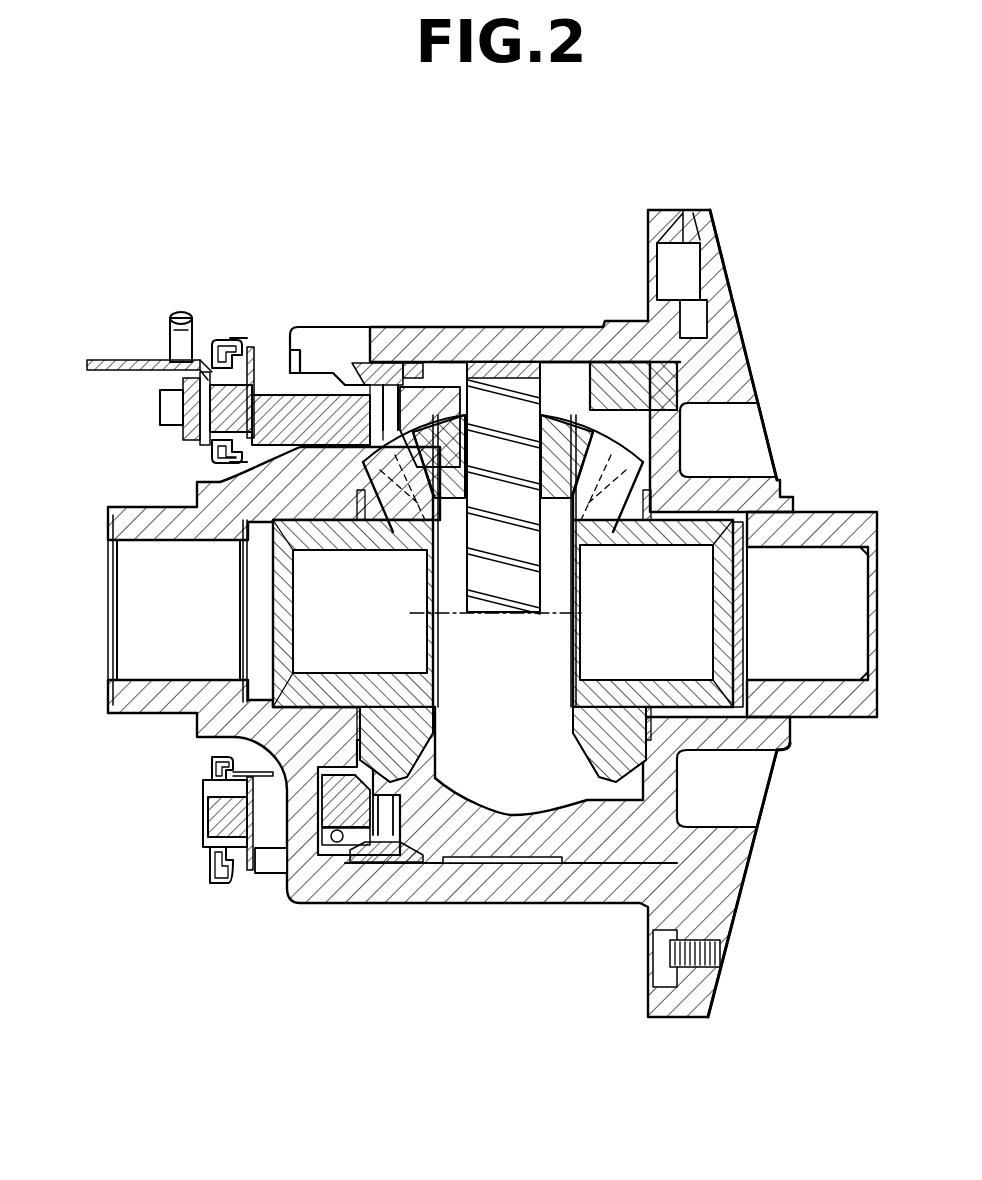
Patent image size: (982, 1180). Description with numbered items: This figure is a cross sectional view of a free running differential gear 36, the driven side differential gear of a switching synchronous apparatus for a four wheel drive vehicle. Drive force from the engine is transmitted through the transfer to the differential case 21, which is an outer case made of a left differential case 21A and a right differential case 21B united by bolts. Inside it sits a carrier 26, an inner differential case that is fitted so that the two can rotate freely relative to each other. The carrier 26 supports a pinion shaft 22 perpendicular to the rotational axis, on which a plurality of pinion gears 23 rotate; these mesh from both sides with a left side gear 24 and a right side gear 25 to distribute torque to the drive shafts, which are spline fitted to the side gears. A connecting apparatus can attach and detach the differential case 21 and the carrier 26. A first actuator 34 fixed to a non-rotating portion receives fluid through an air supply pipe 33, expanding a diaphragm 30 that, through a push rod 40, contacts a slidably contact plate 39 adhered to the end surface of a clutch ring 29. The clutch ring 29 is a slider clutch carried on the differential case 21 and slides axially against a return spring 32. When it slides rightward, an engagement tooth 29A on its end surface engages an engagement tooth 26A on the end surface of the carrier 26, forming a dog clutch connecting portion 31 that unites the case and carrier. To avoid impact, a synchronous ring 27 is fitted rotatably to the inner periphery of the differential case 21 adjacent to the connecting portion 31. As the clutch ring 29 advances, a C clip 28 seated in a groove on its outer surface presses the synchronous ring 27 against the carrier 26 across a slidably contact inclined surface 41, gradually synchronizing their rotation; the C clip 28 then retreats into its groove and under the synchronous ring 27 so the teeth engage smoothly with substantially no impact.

The differential case 21 is at (450, 572).
The left differential case 21A is at (636, 324).
The right differential case 21B is at (620, 325).
The pinion shaft 22 is at (535, 590).
The pinion gear 23 is at (643, 432).
The left side gear 24 is at (378, 530).
The right side gear 25 is at (650, 485).
The carrier 26 is at (517, 362).
The engagement tooth 26A is at (447, 505).
The synchronous ring 27 is at (412, 362).
The C clip 28 is at (293, 365).
The clutch ring 29 is at (300, 480).
The engagement tooth 29A is at (357, 362).
The diaphragm 30 is at (200, 428).
The connecting portion 31 is at (381, 448).
The return spring 32 is at (254, 345).
The air supply pipe 33 is at (170, 338).
The first actuator 34 is at (244, 300).
The free running differential gear 36 is at (757, 283).
The slidably contact plate 39 is at (230, 340).
The push rod 40 is at (215, 410).
The slidably contact inclined surface 41 is at (455, 362).